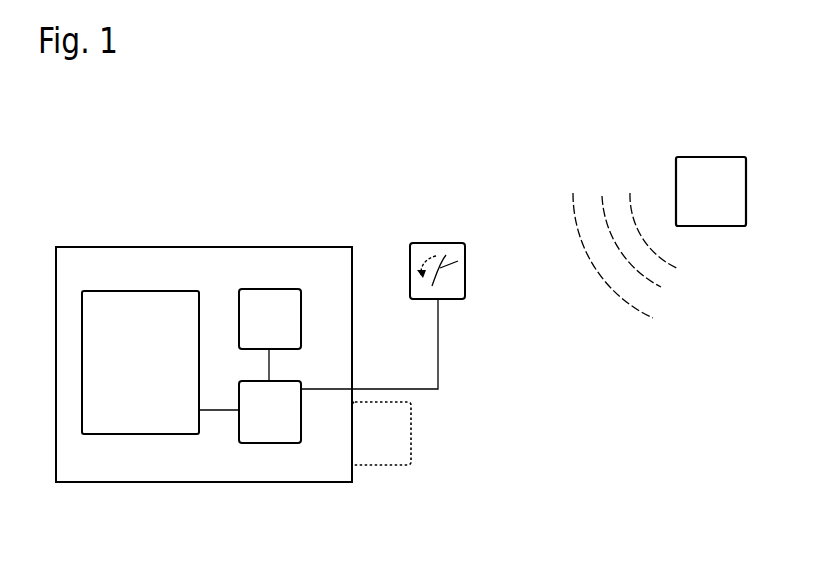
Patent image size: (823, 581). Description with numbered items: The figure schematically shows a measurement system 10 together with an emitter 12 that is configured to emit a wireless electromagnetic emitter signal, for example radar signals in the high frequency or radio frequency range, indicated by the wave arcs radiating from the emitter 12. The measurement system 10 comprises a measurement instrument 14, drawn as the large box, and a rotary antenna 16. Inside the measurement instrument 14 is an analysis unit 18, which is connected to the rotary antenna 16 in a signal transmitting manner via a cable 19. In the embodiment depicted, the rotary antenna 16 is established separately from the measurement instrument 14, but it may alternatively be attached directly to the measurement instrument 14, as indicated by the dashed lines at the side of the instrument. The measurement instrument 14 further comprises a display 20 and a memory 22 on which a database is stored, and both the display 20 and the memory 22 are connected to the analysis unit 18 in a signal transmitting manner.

The measurement system 10 is at (560, 350).
The emitter 12 is at (718, 157).
The measurement instrument 14 is at (212, 247).
The rotary antenna 16 is at (438, 243).
The analysis unit 18 is at (290, 443).
The cable 19 is at (440, 368).
The display 20 is at (140, 434).
The memory 22 is at (285, 289).